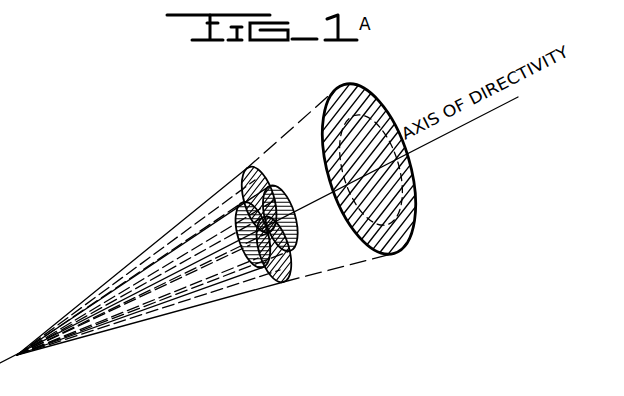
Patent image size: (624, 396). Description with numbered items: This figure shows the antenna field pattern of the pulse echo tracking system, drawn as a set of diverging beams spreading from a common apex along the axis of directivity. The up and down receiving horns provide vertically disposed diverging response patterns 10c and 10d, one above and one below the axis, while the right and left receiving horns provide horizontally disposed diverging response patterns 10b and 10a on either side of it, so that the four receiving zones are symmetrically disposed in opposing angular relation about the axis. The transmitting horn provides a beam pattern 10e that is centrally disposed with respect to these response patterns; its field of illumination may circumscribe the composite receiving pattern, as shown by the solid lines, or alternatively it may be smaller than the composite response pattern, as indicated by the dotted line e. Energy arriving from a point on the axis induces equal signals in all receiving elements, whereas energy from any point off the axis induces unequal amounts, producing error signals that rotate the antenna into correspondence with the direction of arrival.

The horizontally disposed diverging response pattern 10a is at (288, 185).
The horizontally disposed diverging response pattern 10b is at (256, 242).
The vertically disposed diverging response pattern 10c is at (248, 168).
The vertically disposed diverging response pattern 10d is at (285, 282).
The beam pattern 10e is at (414, 192).
The dotted line e is at (398, 177).